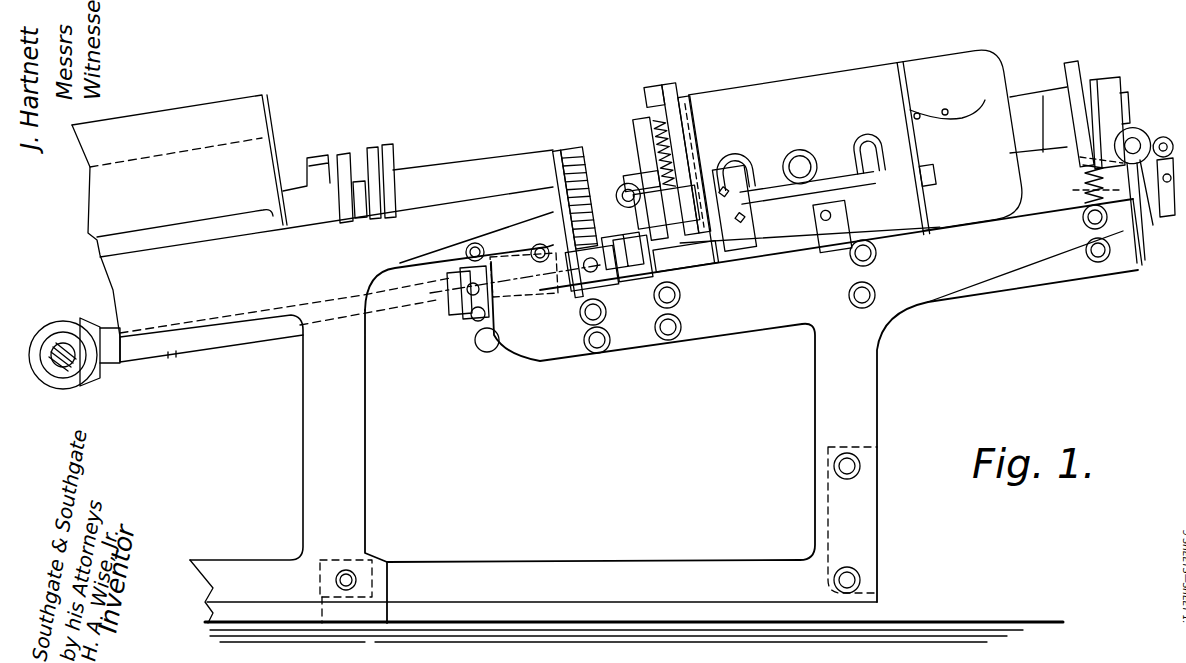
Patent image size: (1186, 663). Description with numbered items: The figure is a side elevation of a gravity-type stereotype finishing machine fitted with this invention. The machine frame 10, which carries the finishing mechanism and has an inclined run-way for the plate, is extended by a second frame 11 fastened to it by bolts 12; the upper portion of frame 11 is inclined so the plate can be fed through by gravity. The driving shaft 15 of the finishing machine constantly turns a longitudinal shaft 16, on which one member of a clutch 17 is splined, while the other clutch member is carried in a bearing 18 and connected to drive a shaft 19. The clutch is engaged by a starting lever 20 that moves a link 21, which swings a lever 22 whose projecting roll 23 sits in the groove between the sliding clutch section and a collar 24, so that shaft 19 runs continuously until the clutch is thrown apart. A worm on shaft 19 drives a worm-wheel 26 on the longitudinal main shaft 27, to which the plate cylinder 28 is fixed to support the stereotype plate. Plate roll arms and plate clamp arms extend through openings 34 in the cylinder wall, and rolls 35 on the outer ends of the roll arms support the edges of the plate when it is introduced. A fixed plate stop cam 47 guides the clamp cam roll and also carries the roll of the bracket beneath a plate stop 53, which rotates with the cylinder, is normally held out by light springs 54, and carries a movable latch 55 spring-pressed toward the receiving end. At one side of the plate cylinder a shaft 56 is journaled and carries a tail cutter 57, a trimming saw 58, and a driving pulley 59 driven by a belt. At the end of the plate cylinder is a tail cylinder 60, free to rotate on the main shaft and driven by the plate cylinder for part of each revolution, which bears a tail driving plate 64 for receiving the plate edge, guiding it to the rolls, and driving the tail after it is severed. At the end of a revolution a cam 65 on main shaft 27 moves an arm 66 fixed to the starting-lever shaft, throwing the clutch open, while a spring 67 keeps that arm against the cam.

The frame 10 is at (350, 457).
The frame 11 is at (832, 425).
The bolts 12 is at (537, 250).
The driving shaft 15 is at (63, 342).
The longitudinal shaft 16 is at (215, 342).
The clutch 17 is at (470, 294).
The bearing 18 is at (515, 295).
The shaft 19 is at (596, 276).
The starting lever 20 is at (1167, 220).
The link 21 is at (484, 330).
The lever 22 is at (478, 323).
The projecting roll 23 is at (462, 293).
The collar 24 is at (440, 262).
The worm-wheel 26 is at (572, 155).
The longitudinal main shaft 27 is at (1143, 75).
The plate cylinder 28 is at (843, 72).
The openings 34 is at (835, 160).
The rolls 35 is at (802, 155).
The plate stop cam 47 is at (640, 130).
The plate stop 53 is at (690, 97).
The light springs 54 is at (682, 144).
The movable latch 55 is at (673, 90).
The shaft 56 is at (773, 198).
The tail cutter 57 is at (927, 190).
The trimming saw 58 is at (722, 240).
The driving pulley 59 is at (651, 227).
The tail cylinder 60 is at (950, 56).
The tail driving plate 64 is at (960, 107).
The cam 65 is at (1073, 87).
The arm 66 is at (1160, 113).
The spring 67 is at (1082, 182).